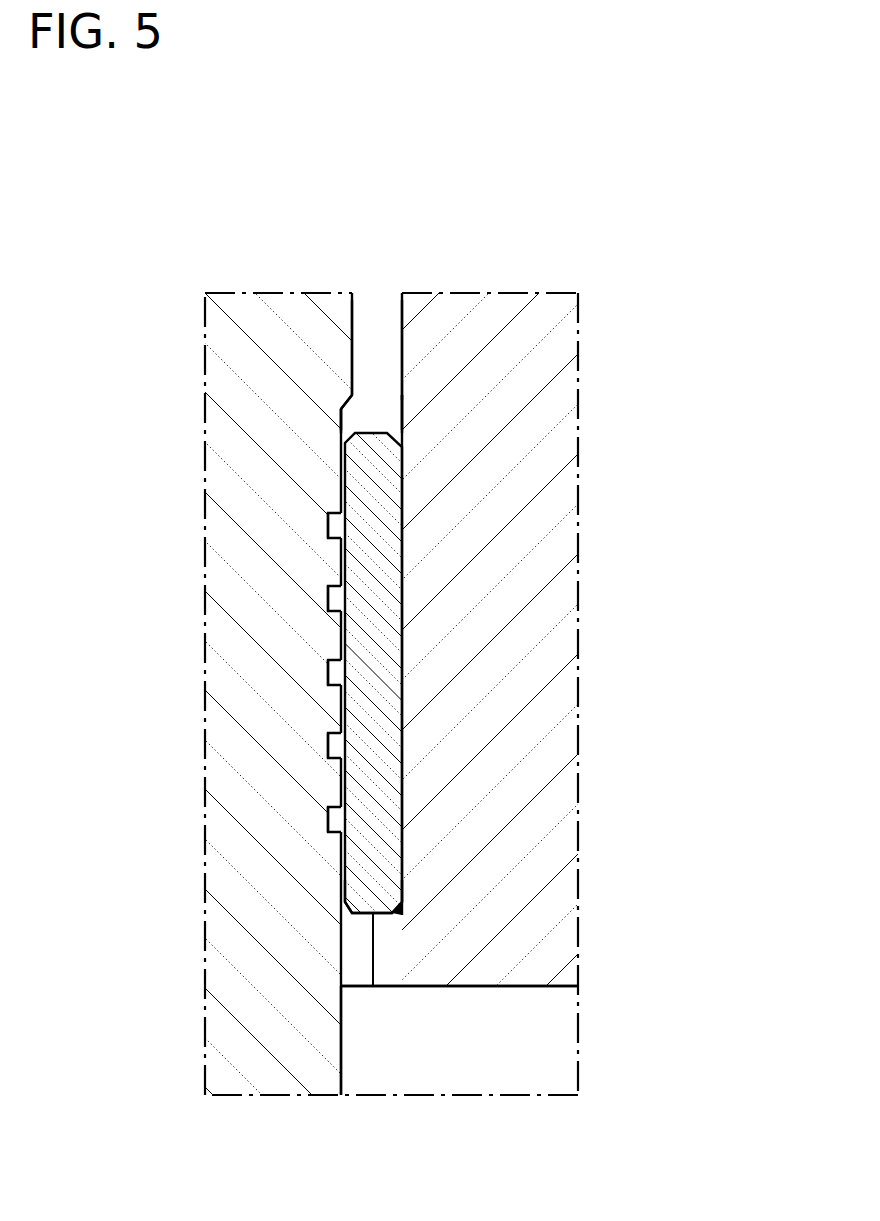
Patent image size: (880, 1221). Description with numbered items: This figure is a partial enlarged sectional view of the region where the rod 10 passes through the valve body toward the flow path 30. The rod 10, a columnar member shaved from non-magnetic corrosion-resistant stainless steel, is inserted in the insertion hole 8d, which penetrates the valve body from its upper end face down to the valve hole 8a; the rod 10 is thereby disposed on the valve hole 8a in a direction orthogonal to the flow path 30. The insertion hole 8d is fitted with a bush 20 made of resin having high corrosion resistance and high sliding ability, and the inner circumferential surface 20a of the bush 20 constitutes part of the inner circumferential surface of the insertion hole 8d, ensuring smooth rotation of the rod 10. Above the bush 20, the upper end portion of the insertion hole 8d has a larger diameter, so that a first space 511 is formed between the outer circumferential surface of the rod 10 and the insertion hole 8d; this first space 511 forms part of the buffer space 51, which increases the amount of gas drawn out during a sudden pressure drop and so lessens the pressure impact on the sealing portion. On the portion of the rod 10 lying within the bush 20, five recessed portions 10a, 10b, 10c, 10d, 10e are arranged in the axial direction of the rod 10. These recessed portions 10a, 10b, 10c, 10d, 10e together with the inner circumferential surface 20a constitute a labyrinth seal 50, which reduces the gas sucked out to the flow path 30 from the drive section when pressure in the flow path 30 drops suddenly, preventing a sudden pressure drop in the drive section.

The rod 10 is at (315, 320).
The insertion hole 8d is at (403, 317).
The first space 511 is at (387, 407).
The buffer space 51 is at (371, 414).
The bush 20 is at (368, 470).
The inner circumferential surface 20a is at (343, 868).
The recessed portion 10a is at (333, 518).
The recessed portion 10b is at (333, 591).
The recessed portion 10c is at (333, 665).
The recessed portion 10d is at (333, 738).
The recessed portion 10e is at (333, 812).
The labyrinth seal 50 is at (662, 512).
The valve hole 8a is at (527, 987).
The flow path 30 is at (459, 1040).